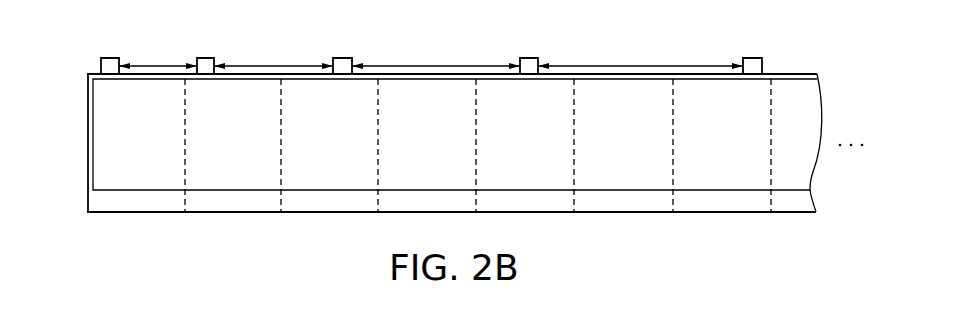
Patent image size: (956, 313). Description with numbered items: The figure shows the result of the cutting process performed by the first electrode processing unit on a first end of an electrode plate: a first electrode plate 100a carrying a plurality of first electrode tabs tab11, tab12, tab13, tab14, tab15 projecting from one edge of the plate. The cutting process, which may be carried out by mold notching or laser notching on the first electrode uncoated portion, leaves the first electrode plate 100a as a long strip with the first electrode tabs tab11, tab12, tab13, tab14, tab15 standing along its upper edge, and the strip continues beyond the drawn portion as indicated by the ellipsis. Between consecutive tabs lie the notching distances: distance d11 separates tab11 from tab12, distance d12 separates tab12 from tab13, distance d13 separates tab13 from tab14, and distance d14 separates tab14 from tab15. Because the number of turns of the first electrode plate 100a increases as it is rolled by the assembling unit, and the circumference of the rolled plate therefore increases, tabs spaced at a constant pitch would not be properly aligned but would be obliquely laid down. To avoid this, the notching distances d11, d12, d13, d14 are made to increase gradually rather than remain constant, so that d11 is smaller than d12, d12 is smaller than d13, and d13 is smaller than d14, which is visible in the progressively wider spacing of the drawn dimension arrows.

The first electrode plate 100a is at (79, 69).
The first electrode tab tab11 is at (110, 53).
The first electrode tab tab12 is at (206, 53).
The first electrode tab tab13 is at (344, 53).
The first electrode tab tab14 is at (530, 53).
The first electrode tab tab15 is at (753, 53).
The notching distance d11 is at (158, 57).
The notching distance d12 is at (273, 57).
The notching distance d13 is at (436, 57).
The notching distance d14 is at (640, 57).